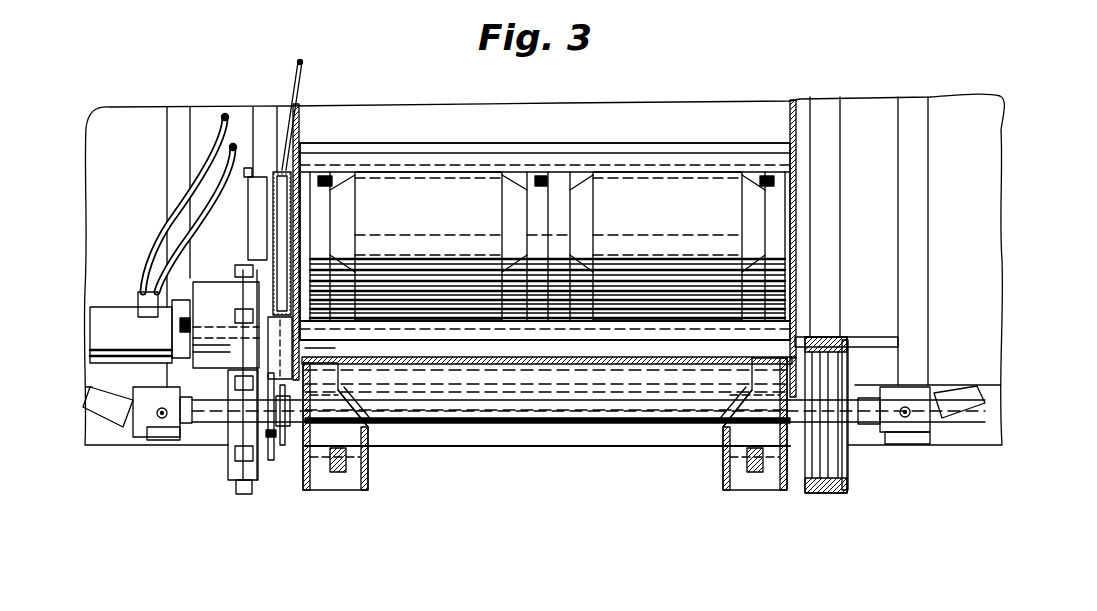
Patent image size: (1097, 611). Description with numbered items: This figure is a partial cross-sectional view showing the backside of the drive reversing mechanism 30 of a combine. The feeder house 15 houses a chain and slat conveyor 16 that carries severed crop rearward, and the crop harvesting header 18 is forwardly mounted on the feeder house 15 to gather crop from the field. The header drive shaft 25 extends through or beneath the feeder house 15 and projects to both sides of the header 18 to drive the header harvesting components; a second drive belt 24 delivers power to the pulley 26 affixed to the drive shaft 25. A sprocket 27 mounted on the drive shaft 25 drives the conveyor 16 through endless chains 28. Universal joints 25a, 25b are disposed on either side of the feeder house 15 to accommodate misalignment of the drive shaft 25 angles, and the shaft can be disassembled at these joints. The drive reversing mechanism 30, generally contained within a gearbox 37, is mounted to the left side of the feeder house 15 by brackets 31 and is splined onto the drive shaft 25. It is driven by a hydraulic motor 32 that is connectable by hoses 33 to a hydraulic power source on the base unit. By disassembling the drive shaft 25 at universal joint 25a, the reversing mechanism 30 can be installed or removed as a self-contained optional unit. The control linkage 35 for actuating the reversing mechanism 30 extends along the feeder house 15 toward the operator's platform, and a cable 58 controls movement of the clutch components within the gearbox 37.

The feeder house 15 is at (300, 115).
The chain and slat conveyor 16 is at (678, 143).
The crop harvesting header 18 is at (860, 98).
The second drive belt 24 is at (827, 492).
The header drive shaft 25 is at (537, 424).
The universal joint 25a is at (148, 442).
The universal joint 25b is at (935, 422).
The pulley 26 is at (846, 460).
The sprocket 27 is at (288, 445).
The endless chains 28 is at (272, 460).
The drive reversing mechanism 30 is at (195, 484).
The brackets 31 is at (258, 232).
The hydraulic motor 32 is at (112, 308).
The hoses 33 is at (211, 136).
The control linkage 35 is at (276, 203).
The gearbox 37 is at (233, 482).
The cable 58 is at (300, 64).